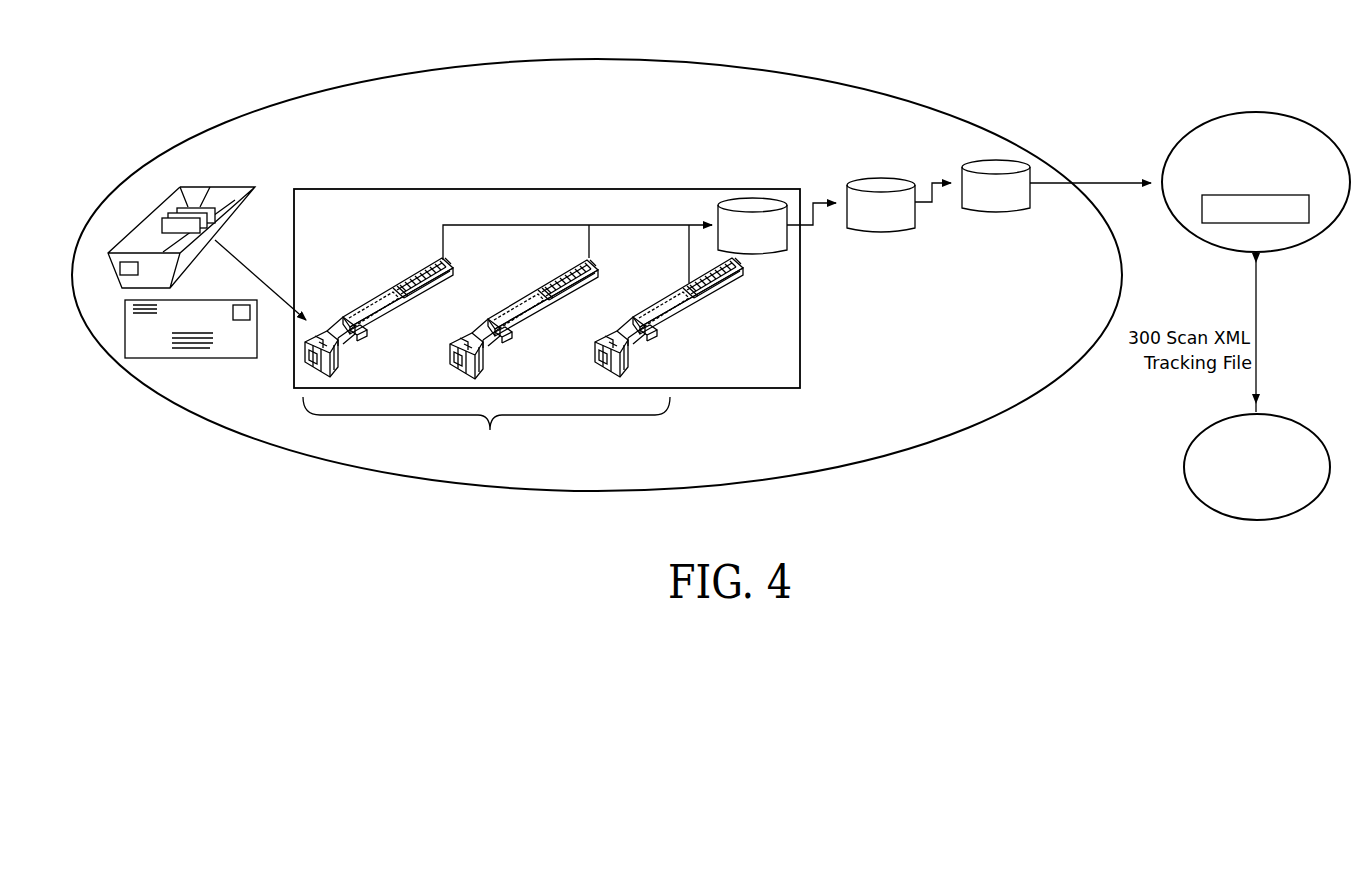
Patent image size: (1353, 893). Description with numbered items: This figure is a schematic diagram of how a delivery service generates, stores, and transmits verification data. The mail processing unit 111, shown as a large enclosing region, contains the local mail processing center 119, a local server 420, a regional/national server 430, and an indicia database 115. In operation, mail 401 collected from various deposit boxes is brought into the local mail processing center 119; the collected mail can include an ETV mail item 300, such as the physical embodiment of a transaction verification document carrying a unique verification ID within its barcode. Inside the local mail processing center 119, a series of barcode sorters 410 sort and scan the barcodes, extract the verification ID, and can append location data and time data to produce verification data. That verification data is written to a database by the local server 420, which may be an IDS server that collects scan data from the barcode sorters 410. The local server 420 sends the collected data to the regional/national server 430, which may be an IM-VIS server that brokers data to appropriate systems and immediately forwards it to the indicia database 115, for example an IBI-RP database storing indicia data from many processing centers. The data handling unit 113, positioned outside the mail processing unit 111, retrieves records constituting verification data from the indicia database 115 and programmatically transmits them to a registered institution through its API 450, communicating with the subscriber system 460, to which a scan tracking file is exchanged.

The mail processing unit 111 is at (490, 61).
The mail 401 is at (201, 205).
The ETV mail item 300 is at (183, 358).
The local mail processing center 119 is at (413, 189).
The barcode sorters 410 is at (523, 341).
The local server 420 is at (742, 198).
The regional/national server 430 is at (873, 178).
The indicia database 115 is at (1003, 212).
The data handling unit 113 is at (1190, 130).
The API 450 is at (1227, 224).
The subscriber system 460 is at (1192, 442).